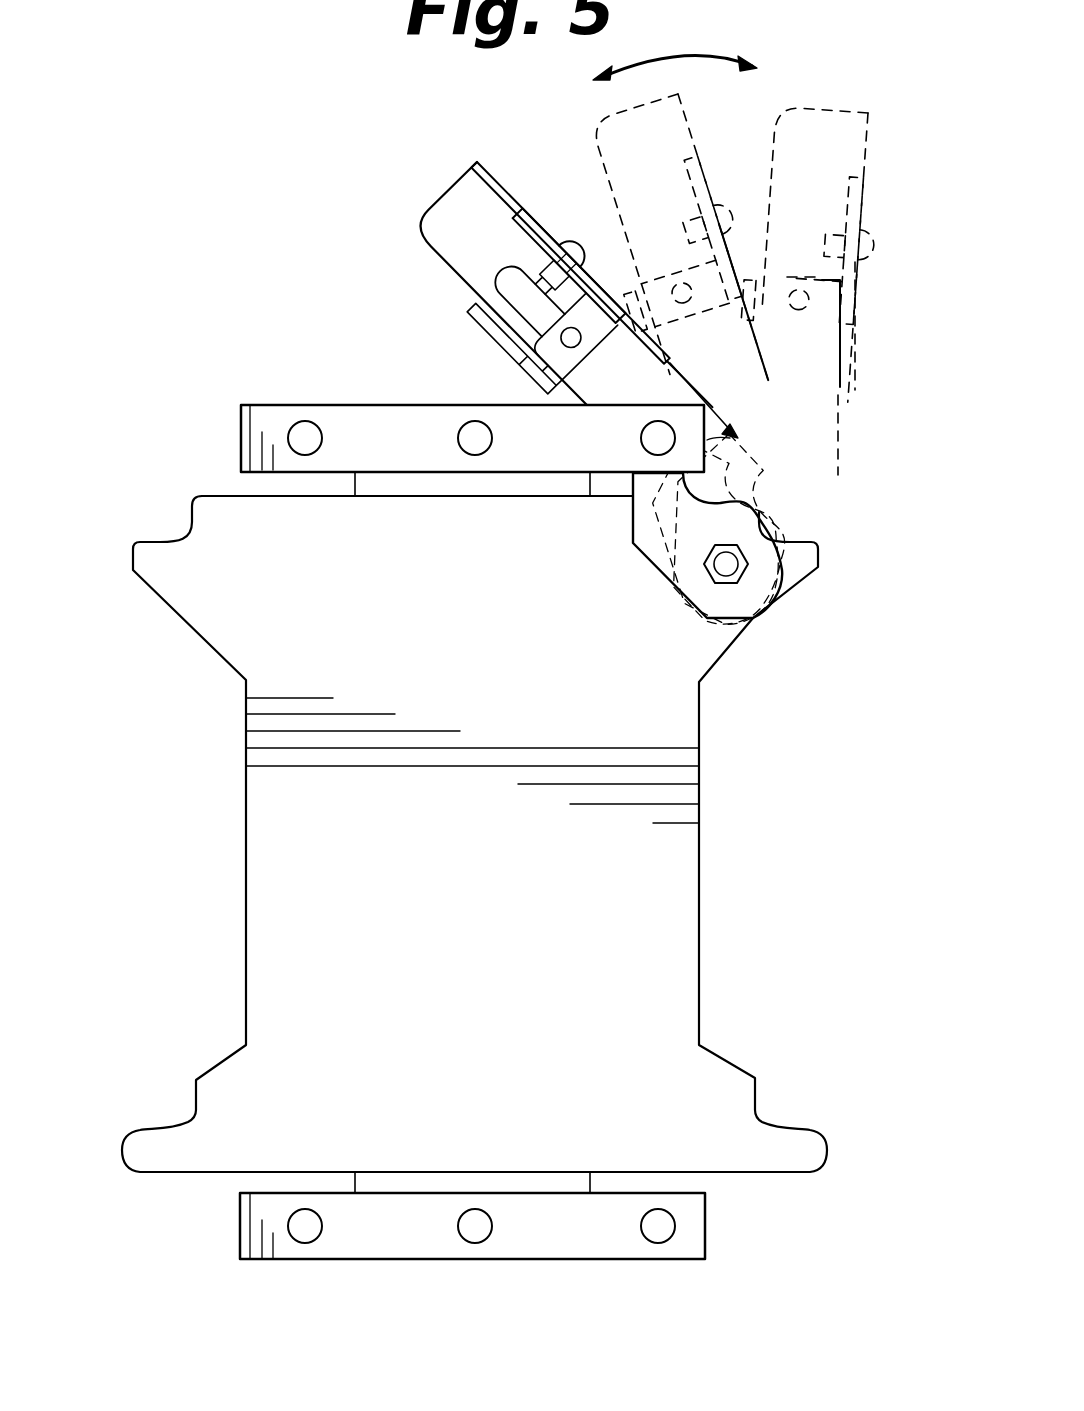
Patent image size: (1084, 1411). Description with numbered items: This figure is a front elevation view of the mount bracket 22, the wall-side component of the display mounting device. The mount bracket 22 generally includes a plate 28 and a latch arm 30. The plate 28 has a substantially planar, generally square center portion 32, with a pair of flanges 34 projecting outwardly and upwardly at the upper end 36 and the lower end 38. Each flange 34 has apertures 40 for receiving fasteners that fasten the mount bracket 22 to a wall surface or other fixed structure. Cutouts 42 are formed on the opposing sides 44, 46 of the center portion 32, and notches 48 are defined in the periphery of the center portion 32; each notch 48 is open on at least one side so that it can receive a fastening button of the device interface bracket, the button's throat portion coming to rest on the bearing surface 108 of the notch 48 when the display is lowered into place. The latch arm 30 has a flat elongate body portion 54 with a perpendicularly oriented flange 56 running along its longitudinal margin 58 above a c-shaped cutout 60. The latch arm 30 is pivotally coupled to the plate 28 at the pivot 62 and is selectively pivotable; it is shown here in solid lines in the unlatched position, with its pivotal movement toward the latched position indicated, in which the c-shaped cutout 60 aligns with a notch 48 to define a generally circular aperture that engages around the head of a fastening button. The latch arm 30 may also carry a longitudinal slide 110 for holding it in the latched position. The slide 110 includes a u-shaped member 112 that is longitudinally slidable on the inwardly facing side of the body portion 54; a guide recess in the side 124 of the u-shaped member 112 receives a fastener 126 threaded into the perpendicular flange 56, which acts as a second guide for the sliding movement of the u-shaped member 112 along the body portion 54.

The mount bracket 22 is at (183, 435).
The plate 28 is at (246, 800).
The latch arm 30 is at (623, 265).
The center portion 32 is at (680, 858).
The flanges 34 is at (400, 415).
The upper end 36 is at (503, 410).
The lower end 38 is at (528, 1245).
The apertures 40 is at (296, 425).
The cutouts 42 is at (189, 744).
The side 44 is at (246, 960).
The side 46 is at (705, 938).
The notches 48 is at (185, 535).
The elongate body portion 54 is at (573, 237).
The perpendicularly oriented flange 56 is at (525, 227).
The longitudinal margin 58 is at (680, 367).
The c-shaped cutout 60 is at (715, 495).
The pivot 62 is at (745, 567).
The bearing surface 108 is at (165, 548).
The longitudinal slide 110 is at (483, 181).
The u-shaped member 112 is at (485, 175).
The side 124 is at (537, 213).
The fastener 126 is at (487, 340).